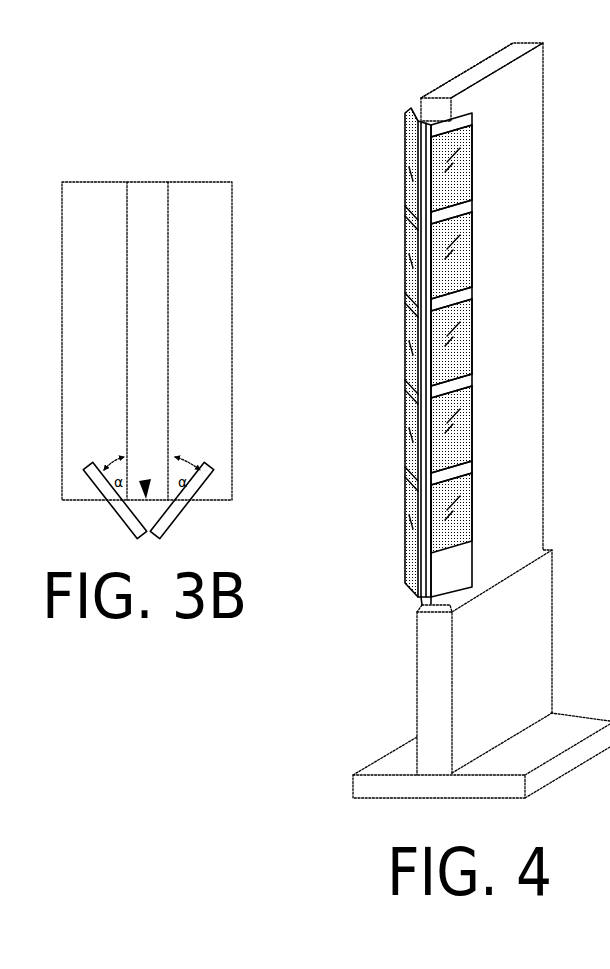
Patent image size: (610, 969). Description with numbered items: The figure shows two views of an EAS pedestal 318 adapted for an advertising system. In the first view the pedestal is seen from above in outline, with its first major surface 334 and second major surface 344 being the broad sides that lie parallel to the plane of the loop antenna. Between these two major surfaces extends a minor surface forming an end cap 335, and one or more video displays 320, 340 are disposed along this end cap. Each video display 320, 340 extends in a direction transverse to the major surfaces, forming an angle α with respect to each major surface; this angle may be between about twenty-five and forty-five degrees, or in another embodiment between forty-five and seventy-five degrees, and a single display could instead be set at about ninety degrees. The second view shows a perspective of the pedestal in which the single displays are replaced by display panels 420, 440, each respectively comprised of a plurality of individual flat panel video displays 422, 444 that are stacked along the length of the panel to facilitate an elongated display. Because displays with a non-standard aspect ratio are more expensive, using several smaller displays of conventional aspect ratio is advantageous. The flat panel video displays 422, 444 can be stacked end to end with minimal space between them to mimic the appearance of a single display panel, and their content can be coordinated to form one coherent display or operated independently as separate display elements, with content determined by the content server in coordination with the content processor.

In FIG. 3B, the EAS pedestal 318 is at (87, 218).
In FIG. 4, the EAS pedestal 318 is at (513, 53).
In FIG. 3B, the second major surface 344 is at (127, 337).
In FIG. 4, the second major surface 344 is at (465, 70).
In FIG. 3B, the first major surface 334 is at (172, 340).
In FIG. 4, the first major surface 334 is at (487, 97).
In FIG. 3B, the end cap 335 is at (146, 484).
In FIG. 3B, the video display 340 is at (118, 517).
In FIG. 3B, the video display 320 is at (173, 523).
In FIG. 4, the flat panel video display 444 is at (408, 163).
In FIG. 4, the flat panel video display 422 is at (463, 183).
In FIG. 4, the display panel 420 is at (458, 573).
In FIG. 4, the display panel 440 is at (410, 572).